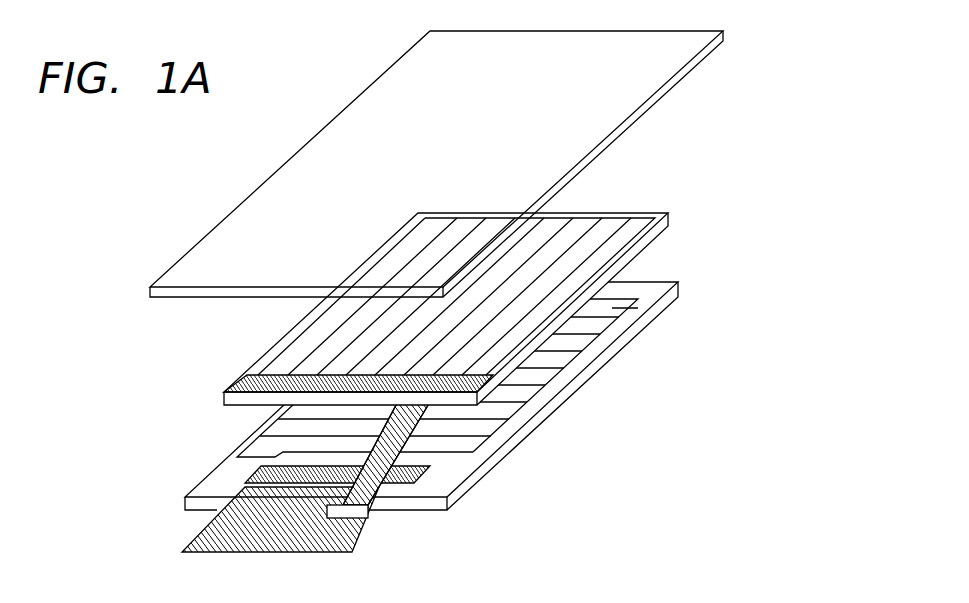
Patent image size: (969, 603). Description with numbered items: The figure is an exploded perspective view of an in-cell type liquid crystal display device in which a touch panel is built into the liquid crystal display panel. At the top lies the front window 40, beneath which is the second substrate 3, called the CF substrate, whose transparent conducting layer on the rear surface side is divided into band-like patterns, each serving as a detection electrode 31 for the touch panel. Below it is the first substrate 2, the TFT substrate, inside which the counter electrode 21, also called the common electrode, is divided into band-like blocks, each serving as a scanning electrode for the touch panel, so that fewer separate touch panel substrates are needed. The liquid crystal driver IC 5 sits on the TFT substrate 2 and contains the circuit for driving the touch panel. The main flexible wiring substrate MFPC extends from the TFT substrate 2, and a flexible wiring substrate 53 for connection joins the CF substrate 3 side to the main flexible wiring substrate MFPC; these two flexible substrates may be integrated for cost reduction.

The front window 40 is at (318, 162).
The second substrate (CF substrate) 3 is at (681, 209).
The detection electrode 31 is at (611, 258).
The first substrate (TFT substrate) 2 is at (210, 465).
The counter electrode (common electrode) 21 is at (553, 355).
The liquid crystal driver IC 5 is at (438, 470).
The flexible wiring substrate for connection 53 is at (402, 503).
The main flexible wiring substrate MFPC is at (234, 527).